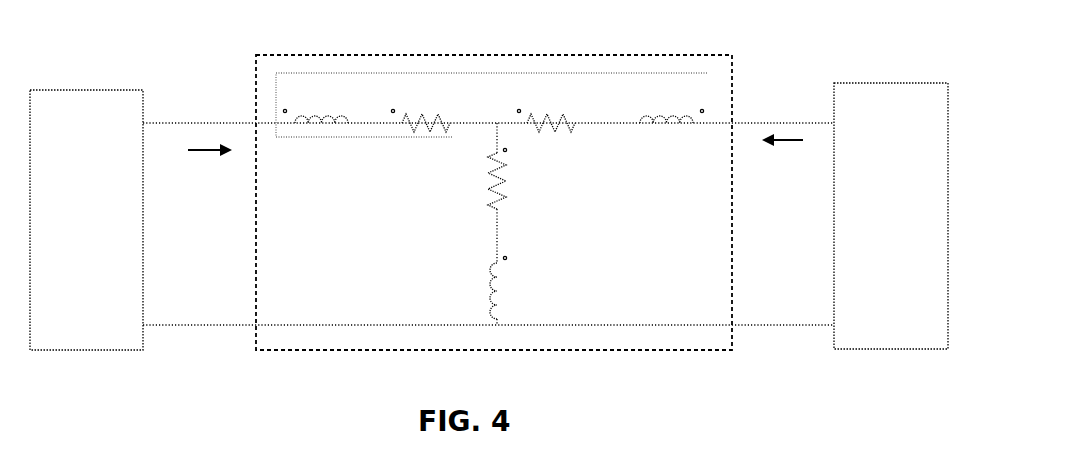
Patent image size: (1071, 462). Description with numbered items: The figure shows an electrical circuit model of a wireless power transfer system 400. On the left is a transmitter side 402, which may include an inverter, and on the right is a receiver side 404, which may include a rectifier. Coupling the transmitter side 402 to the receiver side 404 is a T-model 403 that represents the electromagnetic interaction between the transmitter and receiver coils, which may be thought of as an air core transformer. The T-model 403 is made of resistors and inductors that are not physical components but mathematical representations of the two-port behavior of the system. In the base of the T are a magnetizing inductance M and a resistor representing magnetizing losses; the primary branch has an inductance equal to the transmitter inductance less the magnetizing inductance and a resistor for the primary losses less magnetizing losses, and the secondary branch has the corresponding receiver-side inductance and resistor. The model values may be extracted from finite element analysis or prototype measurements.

The wireless power transfer system 400 is at (200, 44).
The transmitter side 402 is at (103, 90).
The T-model 403 is at (732, 55).
The receiver side 404 is at (878, 83).